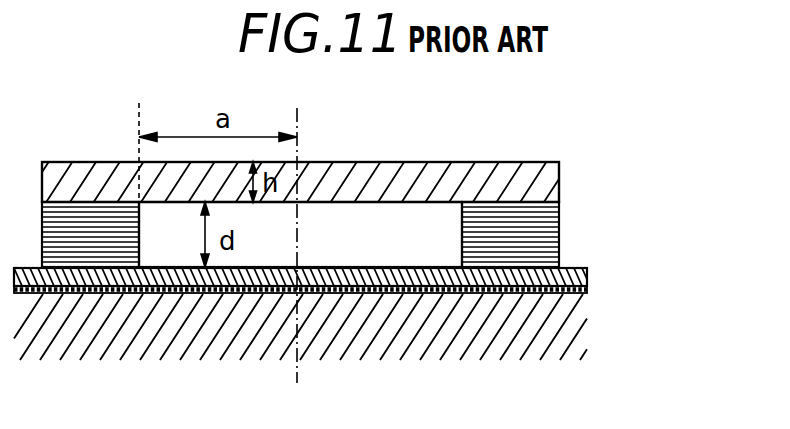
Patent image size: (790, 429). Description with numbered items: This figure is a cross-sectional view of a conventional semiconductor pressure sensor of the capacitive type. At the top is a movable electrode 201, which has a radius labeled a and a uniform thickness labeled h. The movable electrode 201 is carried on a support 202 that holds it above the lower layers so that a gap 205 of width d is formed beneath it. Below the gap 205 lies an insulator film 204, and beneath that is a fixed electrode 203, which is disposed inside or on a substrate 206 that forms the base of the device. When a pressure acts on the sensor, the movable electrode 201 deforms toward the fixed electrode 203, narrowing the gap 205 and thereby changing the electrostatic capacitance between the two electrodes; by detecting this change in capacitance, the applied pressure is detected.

The movable electrode 201 is at (530, 187).
The support 202 is at (530, 237).
The fixed electrode 203 is at (498, 288).
The insulator film 204 is at (575, 278).
The gap 205 is at (300, 234).
The substrate 206 is at (568, 338).